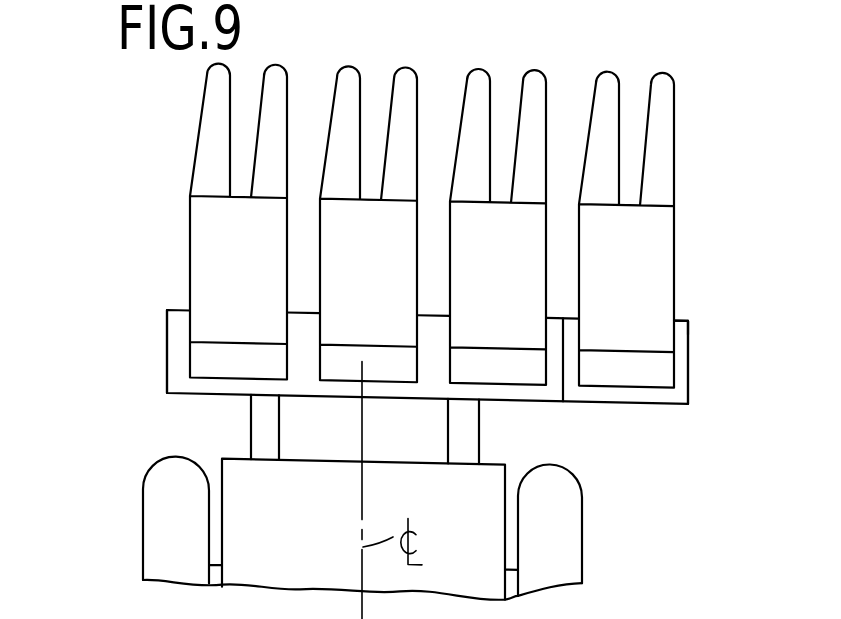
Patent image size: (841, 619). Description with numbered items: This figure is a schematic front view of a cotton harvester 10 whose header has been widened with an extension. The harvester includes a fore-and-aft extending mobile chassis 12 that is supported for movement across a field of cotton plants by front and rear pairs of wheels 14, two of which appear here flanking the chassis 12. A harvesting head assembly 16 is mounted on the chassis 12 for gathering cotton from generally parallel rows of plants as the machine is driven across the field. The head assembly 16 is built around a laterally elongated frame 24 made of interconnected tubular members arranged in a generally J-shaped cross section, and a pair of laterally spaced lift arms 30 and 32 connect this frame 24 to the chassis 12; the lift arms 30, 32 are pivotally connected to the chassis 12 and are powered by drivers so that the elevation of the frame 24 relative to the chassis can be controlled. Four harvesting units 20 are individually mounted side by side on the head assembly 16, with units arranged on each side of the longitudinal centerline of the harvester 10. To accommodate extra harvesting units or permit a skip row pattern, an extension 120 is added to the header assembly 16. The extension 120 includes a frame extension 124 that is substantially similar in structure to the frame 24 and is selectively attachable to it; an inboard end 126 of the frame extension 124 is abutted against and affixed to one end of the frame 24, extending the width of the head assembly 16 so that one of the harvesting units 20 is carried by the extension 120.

The cotton harvester 10 is at (335, 528).
The chassis 12 is at (281, 538).
The wheels 14 is at (162, 540).
The harvesting head assembly 16 is at (411, 347).
The harvesting units 20 is at (219, 281).
The frame 24 is at (163, 362).
The lift arm 30 is at (467, 430).
The lift arm 32 is at (268, 431).
The extension 120 is at (694, 297).
The frame extension 124 is at (680, 370).
The inboard end 126 is at (548, 370).